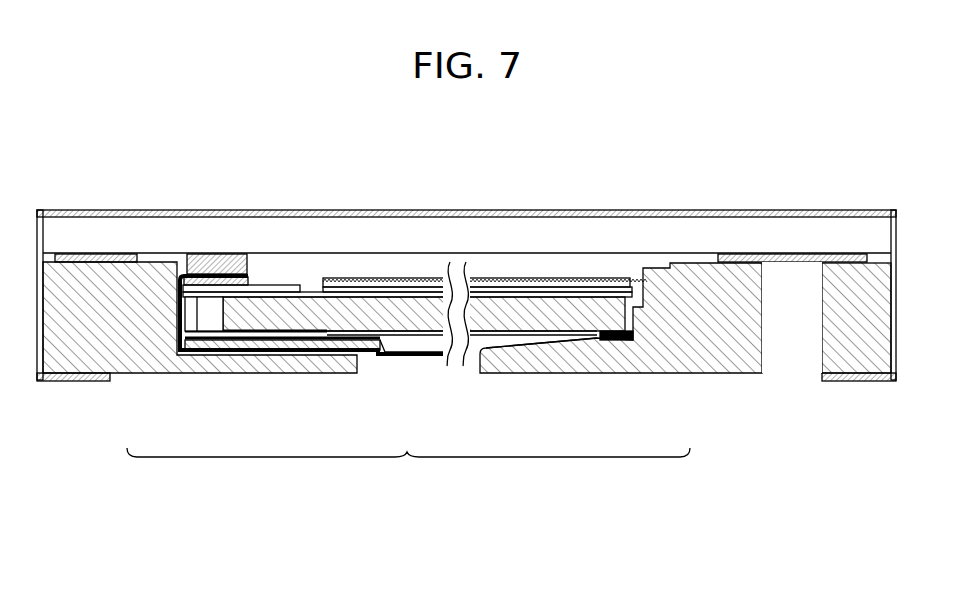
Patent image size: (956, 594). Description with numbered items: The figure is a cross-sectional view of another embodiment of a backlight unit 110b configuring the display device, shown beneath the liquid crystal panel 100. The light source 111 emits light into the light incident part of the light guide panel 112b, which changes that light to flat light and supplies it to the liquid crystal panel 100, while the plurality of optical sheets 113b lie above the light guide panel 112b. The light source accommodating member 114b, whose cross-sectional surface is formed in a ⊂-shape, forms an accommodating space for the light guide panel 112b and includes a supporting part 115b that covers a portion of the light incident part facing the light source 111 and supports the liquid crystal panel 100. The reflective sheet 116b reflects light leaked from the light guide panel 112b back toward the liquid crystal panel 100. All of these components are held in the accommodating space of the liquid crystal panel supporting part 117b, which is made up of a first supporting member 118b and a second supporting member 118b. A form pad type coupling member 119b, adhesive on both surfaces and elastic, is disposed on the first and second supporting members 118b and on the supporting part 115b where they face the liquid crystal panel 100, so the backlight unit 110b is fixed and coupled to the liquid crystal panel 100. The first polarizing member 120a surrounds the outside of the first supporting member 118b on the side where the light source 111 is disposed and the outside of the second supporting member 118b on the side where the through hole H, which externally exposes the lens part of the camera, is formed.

The liquid crystal panel 100 is at (412, 233).
The backlight unit 110b is at (312, 487).
The light source 111 is at (212, 320).
The light guide panel 112b is at (407, 320).
The optical sheets 113b is at (515, 284).
The light source accommodating member 114b is at (270, 345).
The supporting part 115b is at (215, 278).
The reflective sheet 116b is at (578, 336).
The liquid crystal panel supporting part 117b is at (408, 471).
The first and second supporting members 118b is at (127, 350).
The coupling member 119b is at (108, 255).
The first polarizing member 120a is at (50, 378).
The through hole H is at (792, 347).